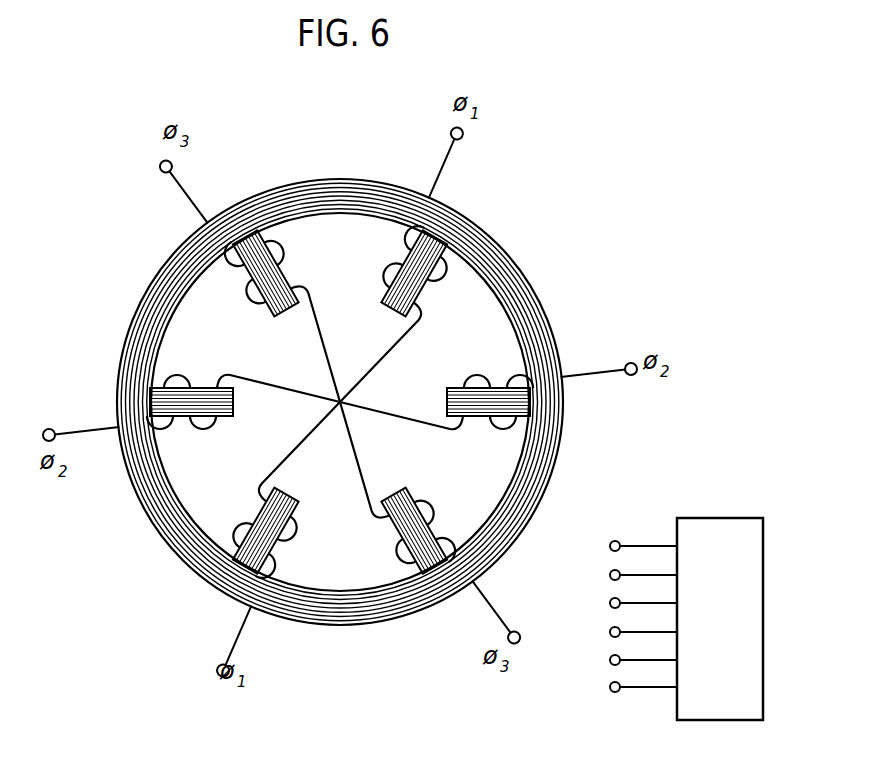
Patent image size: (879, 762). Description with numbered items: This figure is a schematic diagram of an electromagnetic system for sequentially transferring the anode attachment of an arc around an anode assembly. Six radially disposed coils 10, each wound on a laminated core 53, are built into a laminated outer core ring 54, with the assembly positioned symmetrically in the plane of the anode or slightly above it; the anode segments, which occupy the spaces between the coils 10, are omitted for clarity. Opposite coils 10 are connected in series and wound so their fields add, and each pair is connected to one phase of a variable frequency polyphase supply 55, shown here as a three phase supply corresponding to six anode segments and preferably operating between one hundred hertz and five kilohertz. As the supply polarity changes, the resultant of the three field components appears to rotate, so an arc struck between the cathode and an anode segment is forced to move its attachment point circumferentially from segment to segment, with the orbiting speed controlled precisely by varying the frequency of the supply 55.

The radially disposed coil 10 is at (450, 281).
The laminated core 53 is at (475, 423).
The laminated outer core ring 54 is at (523, 279).
The variable frequency polyphase supply 55 is at (733, 641).